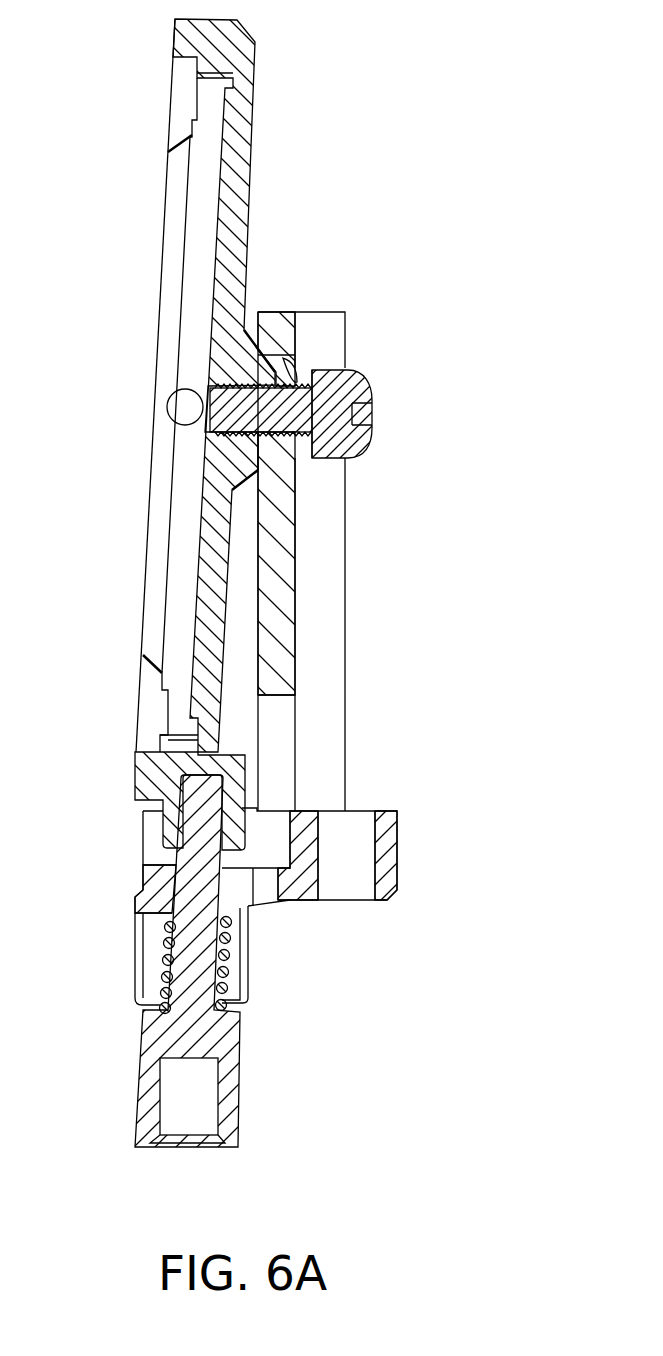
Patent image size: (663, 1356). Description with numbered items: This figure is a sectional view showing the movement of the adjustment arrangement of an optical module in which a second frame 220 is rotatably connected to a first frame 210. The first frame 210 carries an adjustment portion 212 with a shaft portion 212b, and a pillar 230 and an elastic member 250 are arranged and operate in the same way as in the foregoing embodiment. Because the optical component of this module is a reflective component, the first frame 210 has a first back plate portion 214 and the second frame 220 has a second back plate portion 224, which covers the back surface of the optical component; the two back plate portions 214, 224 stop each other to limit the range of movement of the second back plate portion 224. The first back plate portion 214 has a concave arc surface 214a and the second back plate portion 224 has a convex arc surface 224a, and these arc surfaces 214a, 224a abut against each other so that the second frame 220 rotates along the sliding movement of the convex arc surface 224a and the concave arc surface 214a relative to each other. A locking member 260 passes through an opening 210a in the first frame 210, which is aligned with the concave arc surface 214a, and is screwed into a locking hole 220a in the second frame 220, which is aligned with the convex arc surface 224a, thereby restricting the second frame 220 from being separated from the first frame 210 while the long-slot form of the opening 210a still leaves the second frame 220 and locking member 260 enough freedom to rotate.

The first frame 210 is at (410, 929).
The opening 210a is at (315, 368).
The adjustment portion 212 is at (305, 895).
The shaft portion 212b is at (240, 985).
The first back plate portion 214 is at (333, 633).
The concave arc surface 214a is at (256, 362).
The second frame 220 is at (147, 777).
The locking hole 220a is at (213, 428).
The second back plate portion 224 is at (210, 558).
The convex arc surface 224a is at (293, 340).
The pillar 230 is at (233, 1063).
The elastic member 250 is at (165, 965).
The locking member 260 is at (300, 455).